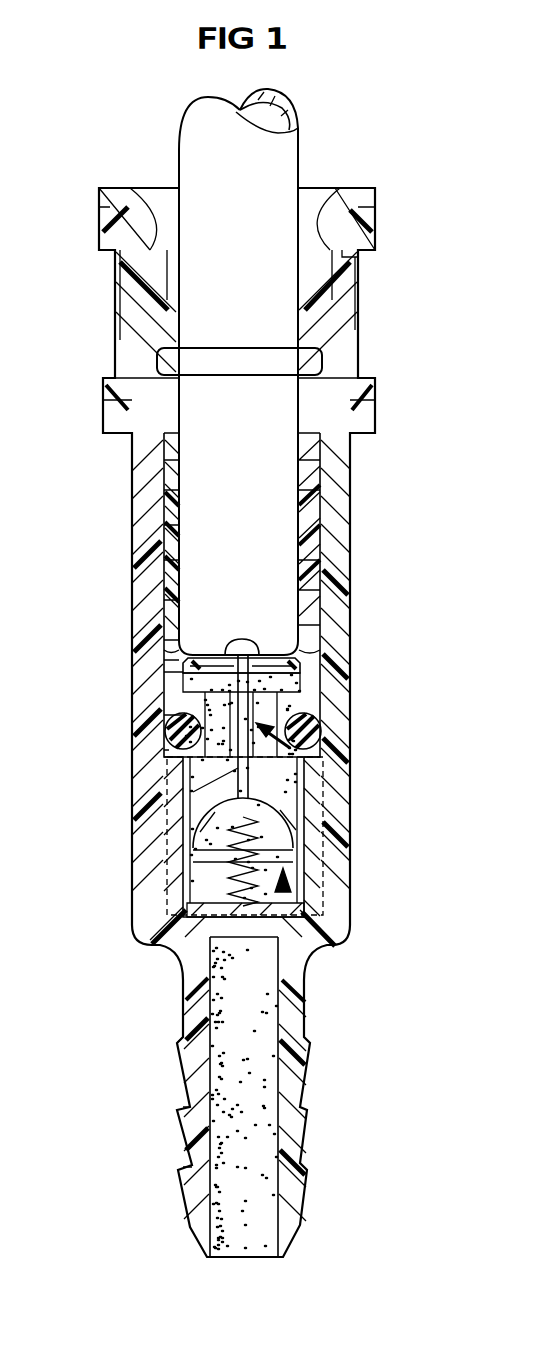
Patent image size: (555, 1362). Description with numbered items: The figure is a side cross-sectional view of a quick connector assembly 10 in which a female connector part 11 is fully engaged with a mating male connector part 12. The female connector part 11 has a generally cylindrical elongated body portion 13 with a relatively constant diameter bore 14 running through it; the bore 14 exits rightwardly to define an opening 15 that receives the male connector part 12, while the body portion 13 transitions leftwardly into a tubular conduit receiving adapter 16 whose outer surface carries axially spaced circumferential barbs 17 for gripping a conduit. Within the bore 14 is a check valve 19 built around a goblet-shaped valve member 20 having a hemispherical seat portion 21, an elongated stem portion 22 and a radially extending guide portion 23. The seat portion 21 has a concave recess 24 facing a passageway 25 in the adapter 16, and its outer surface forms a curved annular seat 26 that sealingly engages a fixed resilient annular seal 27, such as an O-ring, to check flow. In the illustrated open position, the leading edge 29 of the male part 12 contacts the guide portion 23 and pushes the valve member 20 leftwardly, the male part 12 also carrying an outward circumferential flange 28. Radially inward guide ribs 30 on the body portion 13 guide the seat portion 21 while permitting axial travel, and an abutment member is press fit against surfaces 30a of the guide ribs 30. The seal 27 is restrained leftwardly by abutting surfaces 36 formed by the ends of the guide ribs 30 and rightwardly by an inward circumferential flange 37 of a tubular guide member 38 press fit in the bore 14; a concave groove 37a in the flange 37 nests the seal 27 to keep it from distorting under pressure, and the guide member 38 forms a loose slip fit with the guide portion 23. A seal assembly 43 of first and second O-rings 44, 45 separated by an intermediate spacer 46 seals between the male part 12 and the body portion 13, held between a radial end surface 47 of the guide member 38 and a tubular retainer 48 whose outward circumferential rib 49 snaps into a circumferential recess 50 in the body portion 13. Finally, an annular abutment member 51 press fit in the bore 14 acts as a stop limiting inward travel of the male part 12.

The connector assembly 10 is at (98, 172).
The female connector part 11 is at (130, 920).
The male connector part 12 is at (183, 108).
The body portion 13 is at (142, 692).
The bore 14 is at (238, 768).
The opening 15 is at (348, 200).
The conduit receiving adapter 16 is at (197, 990).
The circumferential barbs 17 is at (180, 1170).
The check valve 19 is at (283, 885).
The valve member 20 is at (273, 757).
The seat portion 21 is at (195, 838).
The stem portion 22 is at (193, 792).
The guide portion 23 is at (303, 666).
The concave recess 24 is at (280, 860).
The passageway 25 is at (287, 1027).
The curved annular seat 26 is at (270, 822).
The resilient annular seal 27 is at (168, 750).
The circumferential flange 28 is at (233, 362).
The leading edge 29 is at (222, 654).
The guide ribs 30 is at (313, 803).
The surfaces of guide ribs 30a is at (195, 883).
The abutting surfaces 36 is at (320, 742).
The circumferential flange 37 is at (148, 672).
The concave circumferential groove 37a is at (150, 738).
The tubular guide member 38 is at (172, 620).
The seal assembly 43 is at (159, 565).
The first O-ring 44 is at (312, 585).
The second O-ring 45 is at (163, 510).
The intermediate spacer 46 is at (165, 543).
The radial end surface 47 is at (318, 590).
The tubular retainer 48 is at (313, 433).
The circumferential rib 49 is at (162, 472).
The circumferential recess 50 is at (162, 450).
The annular abutment member 51 is at (330, 387).